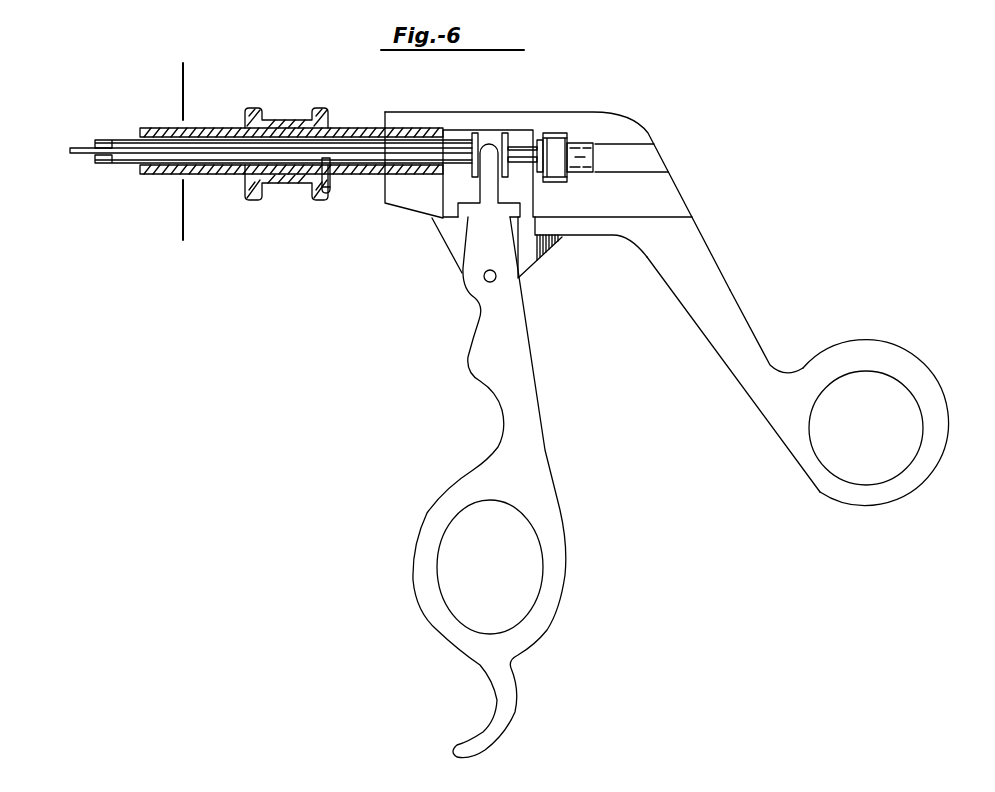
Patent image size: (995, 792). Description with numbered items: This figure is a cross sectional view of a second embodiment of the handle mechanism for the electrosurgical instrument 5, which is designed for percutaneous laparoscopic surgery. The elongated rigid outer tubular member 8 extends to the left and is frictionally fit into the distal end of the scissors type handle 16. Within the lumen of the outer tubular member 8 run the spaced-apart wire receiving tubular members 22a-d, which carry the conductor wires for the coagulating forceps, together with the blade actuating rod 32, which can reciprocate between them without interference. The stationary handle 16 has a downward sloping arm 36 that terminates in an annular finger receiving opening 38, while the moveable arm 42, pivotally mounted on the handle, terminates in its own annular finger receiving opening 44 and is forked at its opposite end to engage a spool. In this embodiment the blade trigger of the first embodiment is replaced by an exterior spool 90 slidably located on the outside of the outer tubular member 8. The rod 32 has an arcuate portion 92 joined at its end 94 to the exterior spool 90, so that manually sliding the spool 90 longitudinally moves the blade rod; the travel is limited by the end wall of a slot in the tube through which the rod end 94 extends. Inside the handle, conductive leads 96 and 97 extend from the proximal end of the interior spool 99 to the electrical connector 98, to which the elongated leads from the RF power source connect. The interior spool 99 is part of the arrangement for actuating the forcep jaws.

The electrosurgical instrument 5 is at (140, 232).
The outer tubular member 8 is at (215, 128).
The scissors type handle 16 is at (642, 120).
The wire receiving tubular members 22a-d is at (102, 129).
The blade actuating rod 32 is at (253, 152).
The downward sloping arm 36 is at (730, 290).
The annular finger receiving opening 38 is at (820, 492).
The moveable arm 42 is at (547, 438).
The annular finger receiving opening 44 is at (557, 577).
The exterior spool 90 is at (308, 118).
The arcuate portion 92 is at (331, 170).
The rod end 94 is at (330, 192).
The conductive lead 96 is at (518, 148).
The conductive lead 97 is at (510, 160).
The electrical connector 98 is at (560, 133).
The interior spool 99 is at (477, 133).